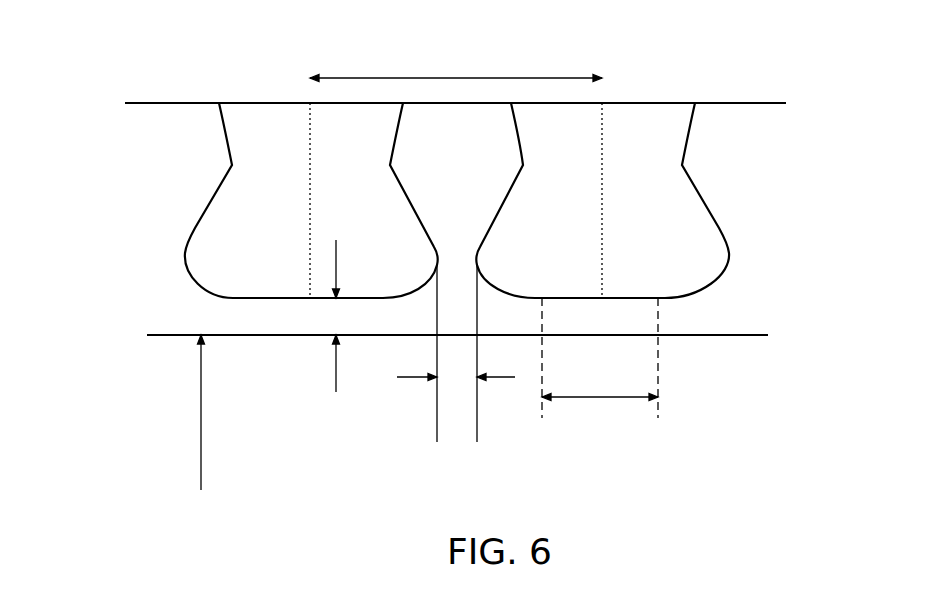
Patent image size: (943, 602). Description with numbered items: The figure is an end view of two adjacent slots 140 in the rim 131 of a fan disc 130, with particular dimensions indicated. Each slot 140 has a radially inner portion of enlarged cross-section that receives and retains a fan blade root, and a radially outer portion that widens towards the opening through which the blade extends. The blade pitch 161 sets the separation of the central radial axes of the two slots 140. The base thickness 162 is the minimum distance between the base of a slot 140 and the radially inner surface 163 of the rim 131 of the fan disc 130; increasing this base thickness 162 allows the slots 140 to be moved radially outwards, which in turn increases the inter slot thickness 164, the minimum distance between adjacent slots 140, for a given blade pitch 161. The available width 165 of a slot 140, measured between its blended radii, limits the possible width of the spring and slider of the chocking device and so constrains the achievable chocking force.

The fan disc 130 is at (788, 278).
The rim 131 is at (72, 201).
The slot 140 is at (248, 213).
The blade pitch 161 is at (456, 61).
The base thickness 162 is at (347, 316).
The radially inner surface 163 is at (228, 412).
The inter slot thickness 164 is at (466, 353).
The available width 165 is at (600, 367).